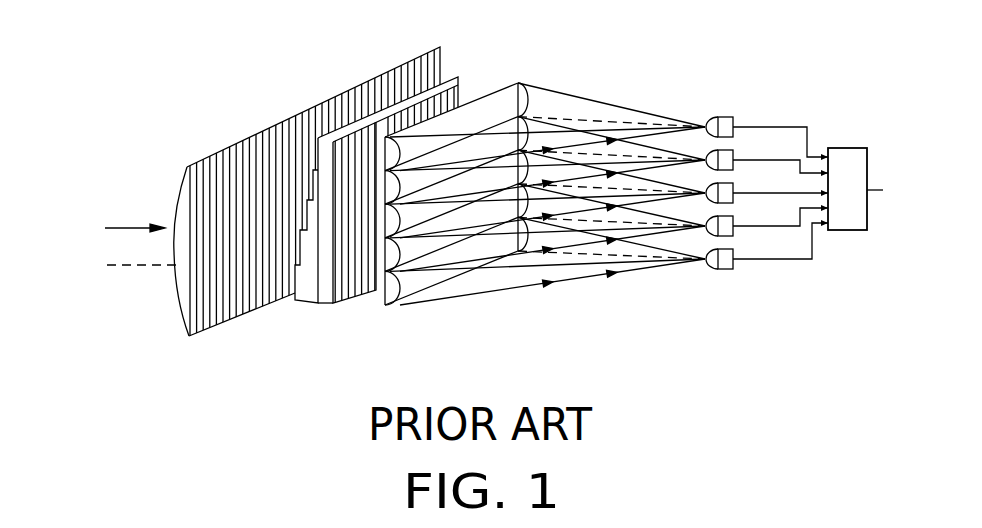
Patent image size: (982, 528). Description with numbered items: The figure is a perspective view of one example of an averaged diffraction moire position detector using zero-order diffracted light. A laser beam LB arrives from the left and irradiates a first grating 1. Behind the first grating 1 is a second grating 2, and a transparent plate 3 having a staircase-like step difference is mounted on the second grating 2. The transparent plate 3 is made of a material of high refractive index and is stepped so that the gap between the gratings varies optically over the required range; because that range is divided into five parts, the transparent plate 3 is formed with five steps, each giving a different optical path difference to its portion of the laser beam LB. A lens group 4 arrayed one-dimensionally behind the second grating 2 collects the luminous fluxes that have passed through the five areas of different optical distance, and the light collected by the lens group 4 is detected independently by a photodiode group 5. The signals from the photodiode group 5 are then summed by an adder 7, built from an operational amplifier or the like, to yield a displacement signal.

The first grating 1 is at (233, 143).
The second grating 2 is at (375, 112).
The transparent plate 3 is at (322, 155).
The lens group 4 is at (505, 102).
The photodiode group 5 is at (723, 117).
The adder 7 is at (853, 148).
The laser beam LB is at (132, 270).